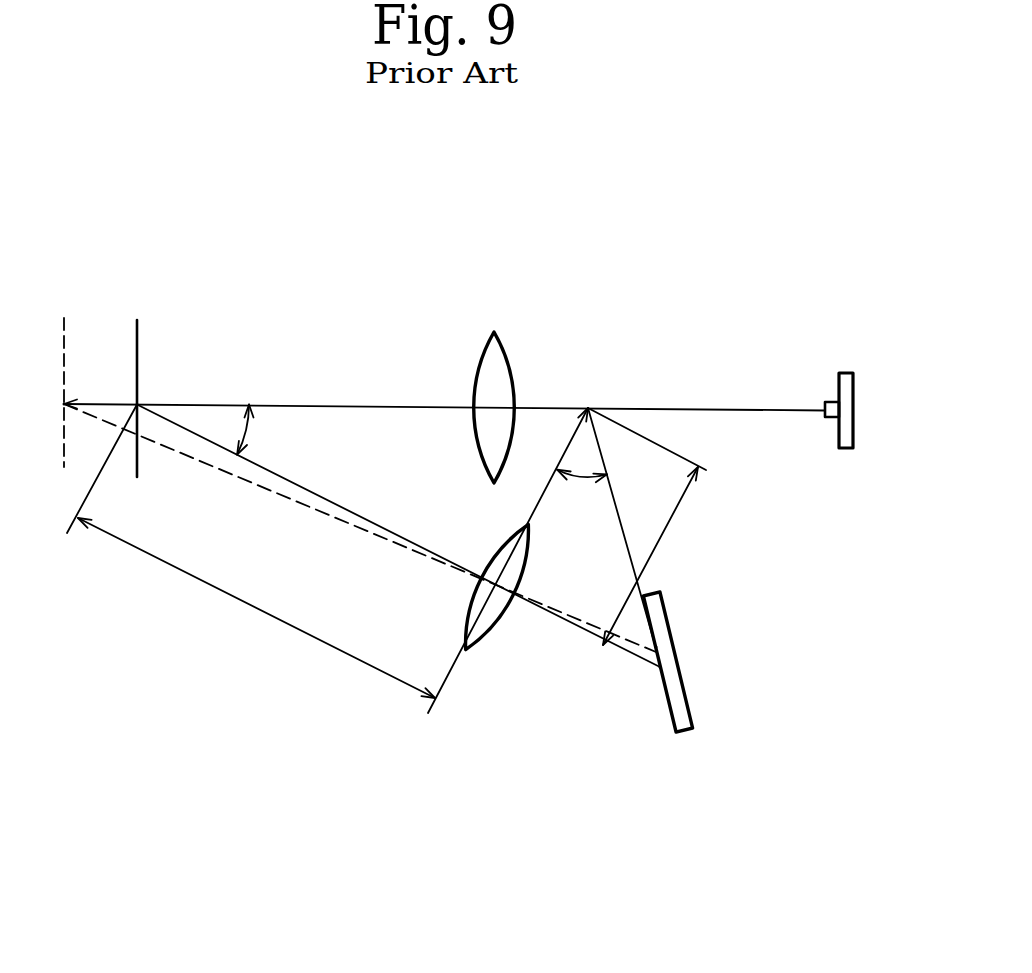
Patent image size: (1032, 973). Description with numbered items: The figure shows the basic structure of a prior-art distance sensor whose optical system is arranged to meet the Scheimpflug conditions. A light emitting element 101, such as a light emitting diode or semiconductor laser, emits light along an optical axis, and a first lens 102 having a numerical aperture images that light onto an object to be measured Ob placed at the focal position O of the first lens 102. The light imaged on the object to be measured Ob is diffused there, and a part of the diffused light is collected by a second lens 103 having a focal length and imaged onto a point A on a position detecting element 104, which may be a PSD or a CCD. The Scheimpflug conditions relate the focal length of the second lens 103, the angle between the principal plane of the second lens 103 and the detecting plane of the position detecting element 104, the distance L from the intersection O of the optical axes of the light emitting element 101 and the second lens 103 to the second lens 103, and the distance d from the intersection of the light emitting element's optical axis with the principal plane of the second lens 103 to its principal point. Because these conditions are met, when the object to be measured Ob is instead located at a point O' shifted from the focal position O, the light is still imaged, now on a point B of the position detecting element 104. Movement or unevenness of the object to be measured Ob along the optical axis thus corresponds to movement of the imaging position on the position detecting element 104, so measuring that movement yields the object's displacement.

The light emitting element 101 is at (850, 372).
The first lens 102 is at (508, 362).
The second lens 103 is at (490, 627).
The position detecting element 104 is at (668, 720).
The object to be measured Ob is at (65, 327).
The focal position O is at (162, 368).
The point shifted from the focal position O' is at (91, 368).
The point on the position detecting element A is at (661, 667).
The point on the position detecting element B is at (657, 647).
The distance L is at (251, 552).
The distance d is at (650, 556).